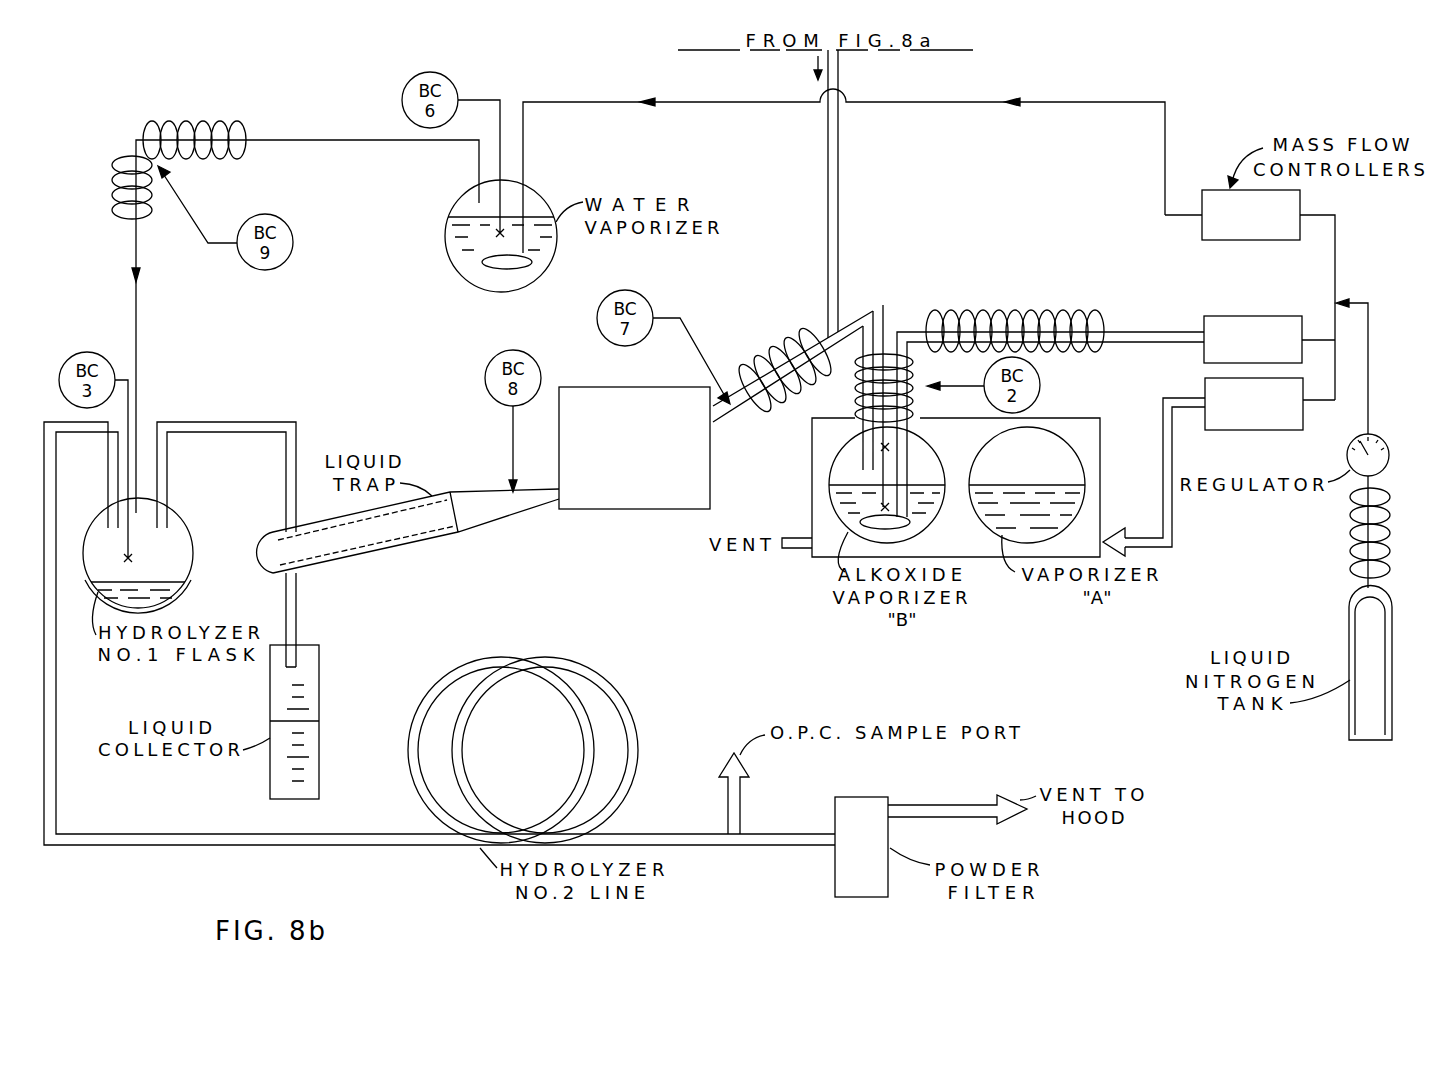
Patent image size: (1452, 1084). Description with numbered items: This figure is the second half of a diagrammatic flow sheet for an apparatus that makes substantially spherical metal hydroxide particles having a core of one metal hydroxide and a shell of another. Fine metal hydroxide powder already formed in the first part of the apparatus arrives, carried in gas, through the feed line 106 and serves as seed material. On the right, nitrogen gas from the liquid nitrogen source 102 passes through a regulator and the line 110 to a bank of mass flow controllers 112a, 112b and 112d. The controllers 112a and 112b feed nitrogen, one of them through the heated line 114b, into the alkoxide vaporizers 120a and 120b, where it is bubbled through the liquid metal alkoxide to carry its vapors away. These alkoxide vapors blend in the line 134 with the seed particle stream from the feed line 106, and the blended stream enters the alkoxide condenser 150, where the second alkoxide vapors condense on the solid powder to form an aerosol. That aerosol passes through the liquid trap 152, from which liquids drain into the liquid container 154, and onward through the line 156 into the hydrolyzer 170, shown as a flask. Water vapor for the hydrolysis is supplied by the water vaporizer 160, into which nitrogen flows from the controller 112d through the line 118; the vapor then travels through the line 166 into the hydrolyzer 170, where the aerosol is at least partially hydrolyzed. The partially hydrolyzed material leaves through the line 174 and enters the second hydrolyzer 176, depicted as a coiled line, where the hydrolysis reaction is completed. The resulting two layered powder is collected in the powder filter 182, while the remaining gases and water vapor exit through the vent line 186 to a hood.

The nitrogen gas source 102 is at (1350, 736).
The feed line 106 is at (825, 185).
The nitrogen line 110 is at (1368, 374).
The controller 112a is at (1219, 467).
The controller 112b is at (1269, 339).
The controller 112d is at (1250, 295).
The gas line 114b is at (1190, 342).
The line 118 is at (555, 103).
The vaporizer 120a is at (1084, 473).
The vaporizer 120b is at (830, 484).
The line 134 is at (850, 318).
The condenser 150 is at (650, 510).
The liquid trap 152 is at (375, 556).
The liquid container 154 is at (320, 700).
The line 156 is at (222, 422).
The vaporizer 160 is at (540, 193).
The line 166 is at (300, 140).
The hydrolyzer 170 is at (186, 512).
The line 174 is at (57, 826).
The hydrolyzer 176 is at (620, 702).
The filter 182 is at (862, 897).
The line 186 is at (912, 805).